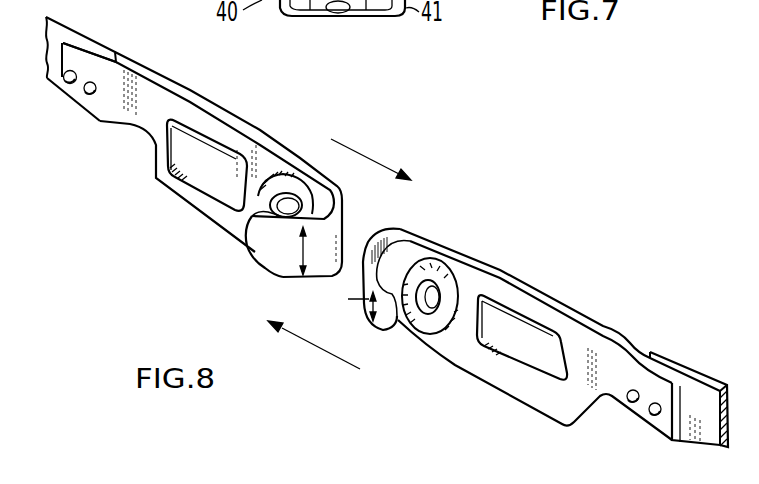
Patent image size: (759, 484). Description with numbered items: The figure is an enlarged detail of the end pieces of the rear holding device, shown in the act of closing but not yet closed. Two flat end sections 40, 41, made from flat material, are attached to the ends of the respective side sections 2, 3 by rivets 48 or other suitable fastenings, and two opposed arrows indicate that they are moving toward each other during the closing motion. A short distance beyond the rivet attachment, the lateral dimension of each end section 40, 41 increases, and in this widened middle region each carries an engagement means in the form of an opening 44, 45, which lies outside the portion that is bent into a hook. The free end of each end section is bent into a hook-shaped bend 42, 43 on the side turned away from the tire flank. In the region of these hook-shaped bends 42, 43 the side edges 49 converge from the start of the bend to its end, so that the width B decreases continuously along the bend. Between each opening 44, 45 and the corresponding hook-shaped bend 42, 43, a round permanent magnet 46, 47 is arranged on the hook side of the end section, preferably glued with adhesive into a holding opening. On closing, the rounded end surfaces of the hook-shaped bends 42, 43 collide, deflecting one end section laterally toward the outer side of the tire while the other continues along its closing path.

The side section 2 is at (57, 42).
The side section 3 is at (694, 383).
The flat end section 40 is at (216, 170).
The flat end section 41 is at (541, 320).
The hook-shaped bend 42 is at (326, 238).
The hook-shaped bend 43 is at (390, 262).
The opening 44 is at (183, 153).
The opening 45 is at (528, 330).
The permanent magnet 46 is at (282, 182).
The permanent magnet 47 is at (445, 283).
The rivets 48 is at (87, 92).
The side edges 49 is at (276, 271).
The width B is at (330, 274).